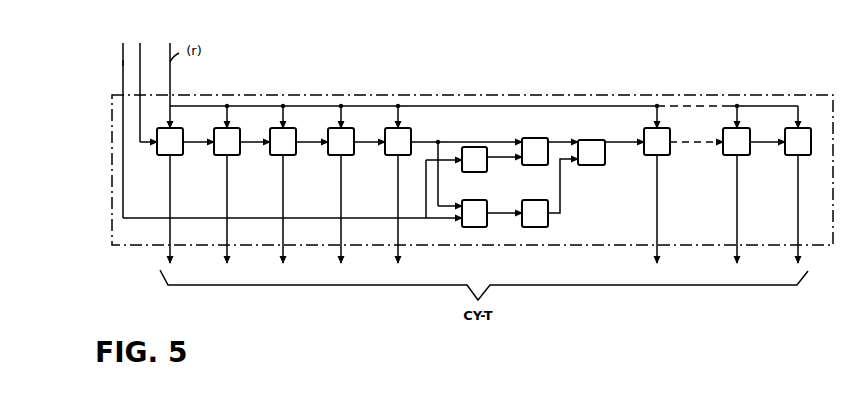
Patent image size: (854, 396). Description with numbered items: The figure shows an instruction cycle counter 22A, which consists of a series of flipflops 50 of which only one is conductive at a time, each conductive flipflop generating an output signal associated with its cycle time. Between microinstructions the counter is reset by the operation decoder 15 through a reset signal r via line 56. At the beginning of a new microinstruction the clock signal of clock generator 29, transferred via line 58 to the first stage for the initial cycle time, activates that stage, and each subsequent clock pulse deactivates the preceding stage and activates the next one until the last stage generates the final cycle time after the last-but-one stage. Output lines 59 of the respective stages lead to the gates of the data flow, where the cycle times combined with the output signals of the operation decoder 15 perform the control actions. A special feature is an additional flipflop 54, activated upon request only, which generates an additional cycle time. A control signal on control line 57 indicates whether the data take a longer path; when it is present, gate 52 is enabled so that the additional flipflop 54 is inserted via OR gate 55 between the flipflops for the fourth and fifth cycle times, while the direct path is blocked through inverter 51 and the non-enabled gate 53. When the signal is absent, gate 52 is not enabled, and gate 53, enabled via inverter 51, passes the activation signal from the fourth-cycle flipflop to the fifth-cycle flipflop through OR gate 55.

The operation decoder 15 is at (144, 119).
The clock generator 29 is at (145, 81).
The control line 57 is at (123, 66).
The clock line 58 is at (140, 84).
The reset line 56 is at (170, 84).
The instruction cycle counter 22A is at (475, 91).
The flipflops 50 is at (183, 129).
The inverter 51 is at (486, 172).
The gate 52 is at (487, 201).
The gate 53 is at (548, 138).
The additional flipflop 54 is at (548, 227).
The OR gate 55 is at (605, 140).
The output lines 59 is at (170, 240).